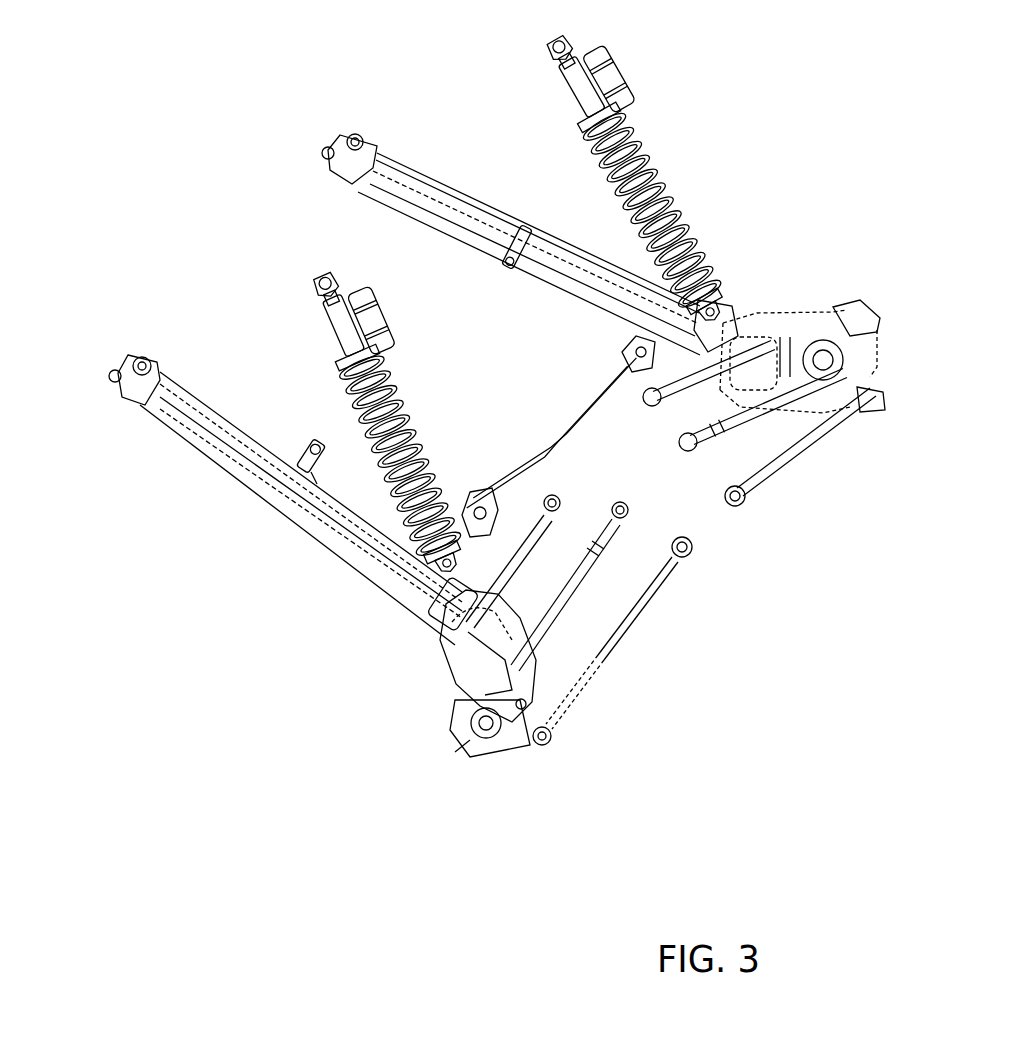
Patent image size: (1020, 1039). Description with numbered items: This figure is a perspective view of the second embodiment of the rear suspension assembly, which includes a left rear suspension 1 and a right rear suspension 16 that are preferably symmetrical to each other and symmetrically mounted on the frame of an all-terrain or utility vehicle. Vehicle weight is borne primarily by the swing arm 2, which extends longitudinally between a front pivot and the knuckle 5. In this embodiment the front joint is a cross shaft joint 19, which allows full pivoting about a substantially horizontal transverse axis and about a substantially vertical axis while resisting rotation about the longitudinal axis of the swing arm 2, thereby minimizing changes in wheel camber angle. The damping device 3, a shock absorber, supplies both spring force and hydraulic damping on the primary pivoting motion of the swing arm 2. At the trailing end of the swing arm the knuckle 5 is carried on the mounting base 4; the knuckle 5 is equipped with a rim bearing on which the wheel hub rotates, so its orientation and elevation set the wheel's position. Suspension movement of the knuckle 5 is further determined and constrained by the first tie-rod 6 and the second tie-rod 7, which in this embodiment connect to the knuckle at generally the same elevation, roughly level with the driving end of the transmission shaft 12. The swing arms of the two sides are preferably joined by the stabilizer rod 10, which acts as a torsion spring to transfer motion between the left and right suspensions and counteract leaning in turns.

The left rear suspension 1 is at (252, 503).
The swing arm 2 is at (237, 468).
The damping device 3 is at (324, 283).
The mounting base for the knuckle 4 is at (488, 600).
The knuckle 5 is at (491, 748).
The first tie-rod 6 is at (518, 568).
The second tie-rod 7 is at (655, 590).
The stabilizer rod 10 is at (518, 477).
The transmission shaft 12 is at (582, 577).
The right rear suspension 16 is at (492, 195).
The cross shaft joint 19 is at (131, 378).